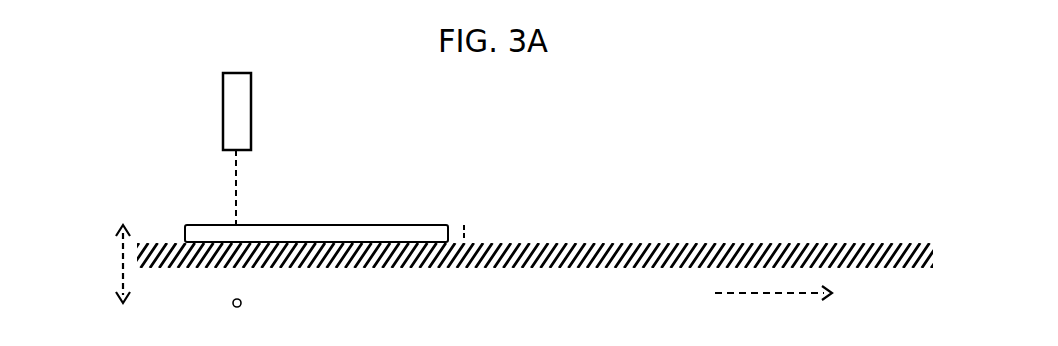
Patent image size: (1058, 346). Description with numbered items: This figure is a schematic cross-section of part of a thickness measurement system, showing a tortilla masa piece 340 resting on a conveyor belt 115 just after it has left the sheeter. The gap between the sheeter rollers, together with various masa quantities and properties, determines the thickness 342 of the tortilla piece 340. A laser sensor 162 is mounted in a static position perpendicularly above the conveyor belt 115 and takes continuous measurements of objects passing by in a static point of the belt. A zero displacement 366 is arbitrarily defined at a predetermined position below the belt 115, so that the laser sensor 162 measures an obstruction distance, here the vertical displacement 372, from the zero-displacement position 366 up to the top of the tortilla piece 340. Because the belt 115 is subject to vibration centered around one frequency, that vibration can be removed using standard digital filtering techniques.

The conveyor belt 115 is at (812, 240).
The laser sensor 162 is at (218, 106).
The tortilla masa piece 340 is at (372, 218).
The thickness 342 is at (473, 235).
The zero displacement 366 is at (243, 304).
The vertical displacement 372 is at (118, 275).